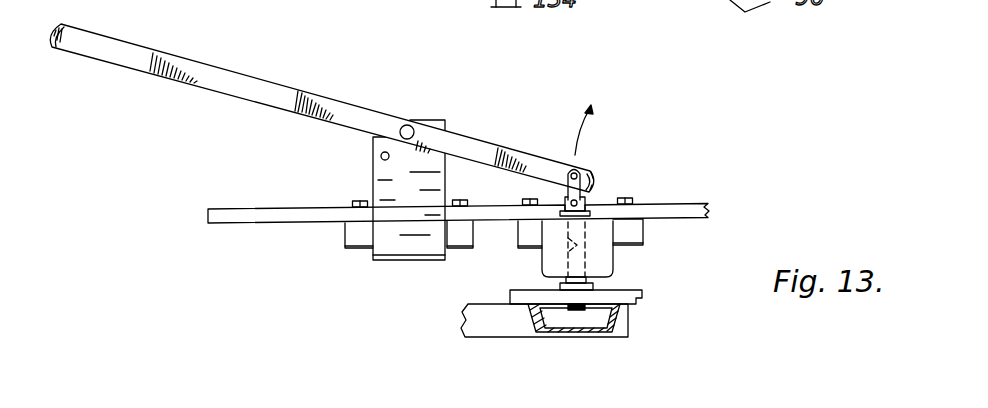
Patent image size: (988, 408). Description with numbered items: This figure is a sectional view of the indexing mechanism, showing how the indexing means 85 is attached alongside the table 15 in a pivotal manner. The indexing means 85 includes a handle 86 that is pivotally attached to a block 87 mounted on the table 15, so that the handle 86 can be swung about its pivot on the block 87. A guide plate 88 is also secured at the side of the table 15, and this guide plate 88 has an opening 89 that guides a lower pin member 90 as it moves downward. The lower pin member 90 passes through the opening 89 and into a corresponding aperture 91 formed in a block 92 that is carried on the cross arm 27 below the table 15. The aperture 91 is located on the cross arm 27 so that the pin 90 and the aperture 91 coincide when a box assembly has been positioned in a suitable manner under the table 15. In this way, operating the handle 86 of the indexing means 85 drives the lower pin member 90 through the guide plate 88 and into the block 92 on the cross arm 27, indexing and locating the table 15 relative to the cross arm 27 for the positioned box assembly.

The table 15 is at (663, 212).
The cross arm 27 is at (628, 328).
The indexing means 85 is at (321, 108).
The handle 86 is at (326, 103).
The block 87 is at (380, 169).
The guide plate 88 is at (613, 260).
The opening 89 is at (568, 250).
The lower pin member 90 is at (568, 310).
The aperture 91 is at (583, 293).
The block 92 is at (627, 293).